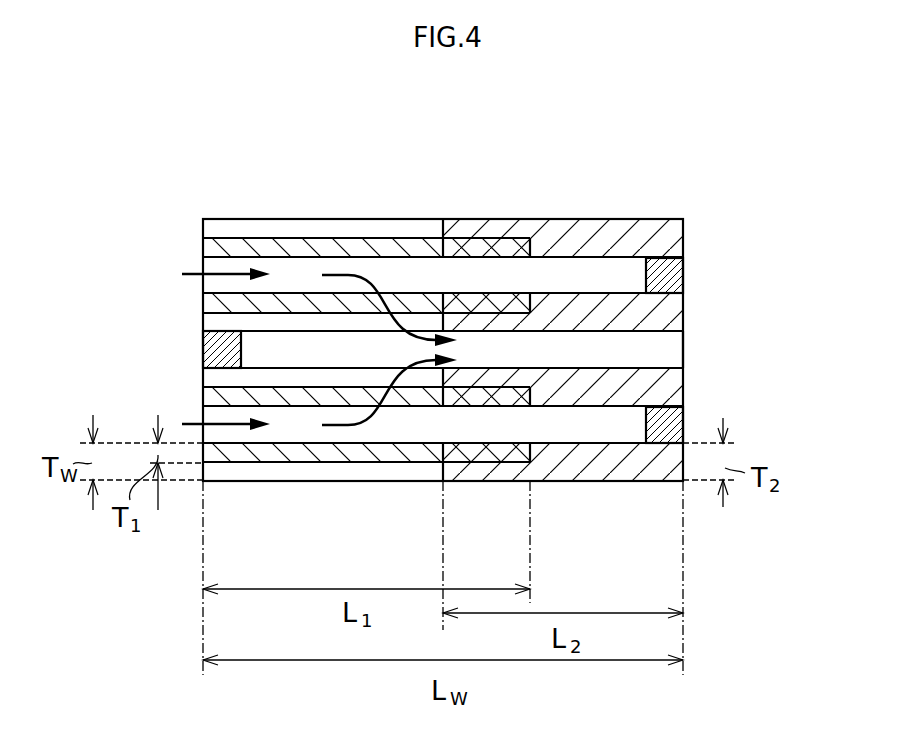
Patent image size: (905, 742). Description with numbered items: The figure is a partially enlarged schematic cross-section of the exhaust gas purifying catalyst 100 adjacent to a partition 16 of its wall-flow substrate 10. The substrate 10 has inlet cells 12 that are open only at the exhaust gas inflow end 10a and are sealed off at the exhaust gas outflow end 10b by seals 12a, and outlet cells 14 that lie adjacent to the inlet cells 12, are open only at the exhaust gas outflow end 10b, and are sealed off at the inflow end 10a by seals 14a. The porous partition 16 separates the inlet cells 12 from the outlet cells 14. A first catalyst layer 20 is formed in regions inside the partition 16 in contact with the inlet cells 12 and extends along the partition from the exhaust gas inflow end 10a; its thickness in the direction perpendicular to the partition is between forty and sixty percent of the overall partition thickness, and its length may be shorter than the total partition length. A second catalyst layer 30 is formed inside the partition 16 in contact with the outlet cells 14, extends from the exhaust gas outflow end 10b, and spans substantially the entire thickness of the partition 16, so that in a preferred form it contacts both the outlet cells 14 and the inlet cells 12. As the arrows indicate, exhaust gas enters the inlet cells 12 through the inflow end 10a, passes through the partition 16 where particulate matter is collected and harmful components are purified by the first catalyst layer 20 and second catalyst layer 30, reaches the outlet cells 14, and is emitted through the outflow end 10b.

The exhaust gas purifying catalyst 100 is at (701, 108).
The substrate 10 is at (679, 202).
The exhaust gas inflow end 10a is at (203, 305).
The exhaust gas outflow end 10b is at (685, 302).
The inlet cell 12 is at (553, 272).
The seal 12a is at (683, 260).
The outlet cell 14 is at (663, 357).
The seal 14a is at (203, 345).
The partition 16 is at (400, 291).
The first catalyst layer 20 is at (287, 291).
The second catalyst layer 30 is at (633, 260).